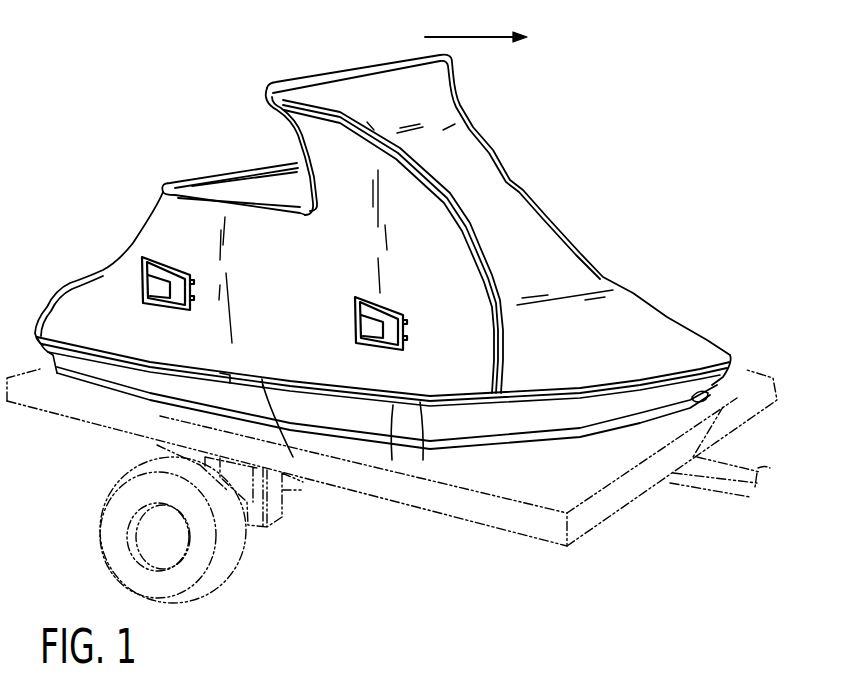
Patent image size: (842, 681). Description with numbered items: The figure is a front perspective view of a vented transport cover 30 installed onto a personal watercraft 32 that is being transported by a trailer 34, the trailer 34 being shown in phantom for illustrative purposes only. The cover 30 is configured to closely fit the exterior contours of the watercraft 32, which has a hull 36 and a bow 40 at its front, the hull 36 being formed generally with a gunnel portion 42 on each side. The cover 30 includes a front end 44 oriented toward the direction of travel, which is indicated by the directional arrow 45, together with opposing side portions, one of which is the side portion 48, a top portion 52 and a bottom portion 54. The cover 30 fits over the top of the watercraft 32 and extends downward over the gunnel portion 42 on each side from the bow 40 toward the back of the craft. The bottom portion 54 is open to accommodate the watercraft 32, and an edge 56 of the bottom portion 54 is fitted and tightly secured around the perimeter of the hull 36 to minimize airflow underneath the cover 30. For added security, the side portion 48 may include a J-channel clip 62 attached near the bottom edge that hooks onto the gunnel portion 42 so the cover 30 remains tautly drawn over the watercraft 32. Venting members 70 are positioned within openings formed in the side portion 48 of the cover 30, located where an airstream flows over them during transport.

The vented transport cover 30 is at (482, 131).
The personal watercraft 32 is at (80, 367).
The trailer 34 is at (779, 384).
The hull 36 is at (563, 422).
The bow 40 is at (717, 380).
The gunnel portion 42 is at (393, 405).
The front end 44 is at (537, 242).
The directional arrow 45 is at (473, 35).
The side portion 48 is at (180, 213).
The top portion 52 is at (370, 85).
The bottom portion 54 is at (117, 340).
The edge 56 is at (420, 402).
The J-channel clip 62 is at (263, 385).
The venting member 70 is at (157, 282).